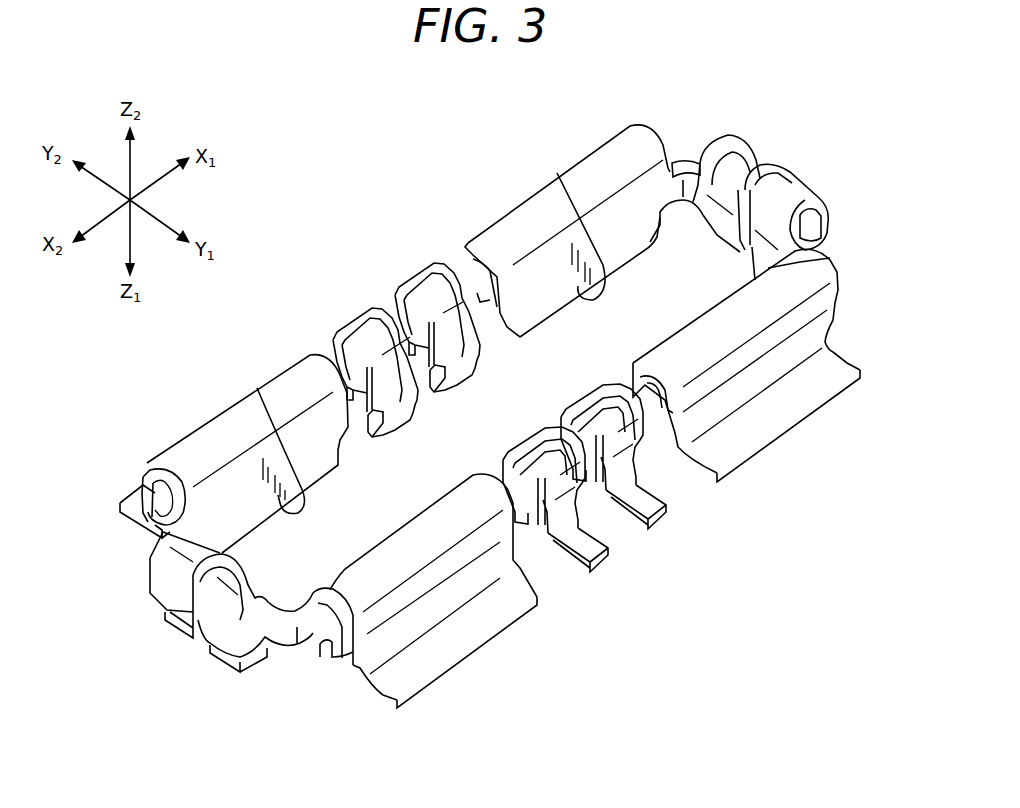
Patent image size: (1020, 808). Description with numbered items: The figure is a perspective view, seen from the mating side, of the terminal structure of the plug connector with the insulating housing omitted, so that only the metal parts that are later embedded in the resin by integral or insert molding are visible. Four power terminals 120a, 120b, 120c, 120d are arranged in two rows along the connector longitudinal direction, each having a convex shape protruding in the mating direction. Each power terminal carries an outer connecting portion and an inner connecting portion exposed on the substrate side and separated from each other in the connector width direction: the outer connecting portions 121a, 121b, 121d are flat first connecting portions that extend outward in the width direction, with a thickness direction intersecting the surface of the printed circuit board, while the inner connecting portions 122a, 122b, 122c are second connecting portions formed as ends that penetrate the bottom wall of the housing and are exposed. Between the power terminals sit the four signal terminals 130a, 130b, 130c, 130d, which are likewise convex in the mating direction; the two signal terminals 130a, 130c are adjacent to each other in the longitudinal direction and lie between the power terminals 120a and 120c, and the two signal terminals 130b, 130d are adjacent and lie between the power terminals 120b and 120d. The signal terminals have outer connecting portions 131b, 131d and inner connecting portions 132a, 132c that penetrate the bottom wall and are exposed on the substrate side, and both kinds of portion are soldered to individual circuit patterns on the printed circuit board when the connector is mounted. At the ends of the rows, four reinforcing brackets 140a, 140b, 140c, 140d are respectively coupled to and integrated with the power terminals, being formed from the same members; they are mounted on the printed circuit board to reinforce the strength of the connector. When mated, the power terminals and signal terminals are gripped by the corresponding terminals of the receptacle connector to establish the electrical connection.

The power terminal 120a is at (205, 445).
The outer connecting portion 121a is at (117, 510).
The inner connecting portion 122a is at (257, 388).
The reinforcing bracket 140a is at (158, 555).
The reinforcing bracket 140b is at (227, 600).
The inner connecting portion 122b is at (323, 660).
The power terminal 120b is at (415, 537).
The outer connecting portion 121b is at (477, 648).
The signal terminal 130a is at (367, 330).
The inner connecting portion 132a is at (413, 430).
The signal terminal 130c is at (430, 272).
The inner connecting portion 132c is at (487, 375).
The power terminal 120c is at (518, 215).
The inner connecting portion 122c is at (557, 173).
The reinforcing bracket 140c is at (747, 153).
The reinforcing bracket 140d is at (787, 187).
The power terminal 120d is at (717, 330).
The outer connecting portion 121d is at (783, 432).
The signal terminal 130b is at (537, 450).
The outer connecting portion 131b is at (600, 560).
The signal terminal 130d is at (600, 407).
The outer connecting portion 131d is at (663, 513).